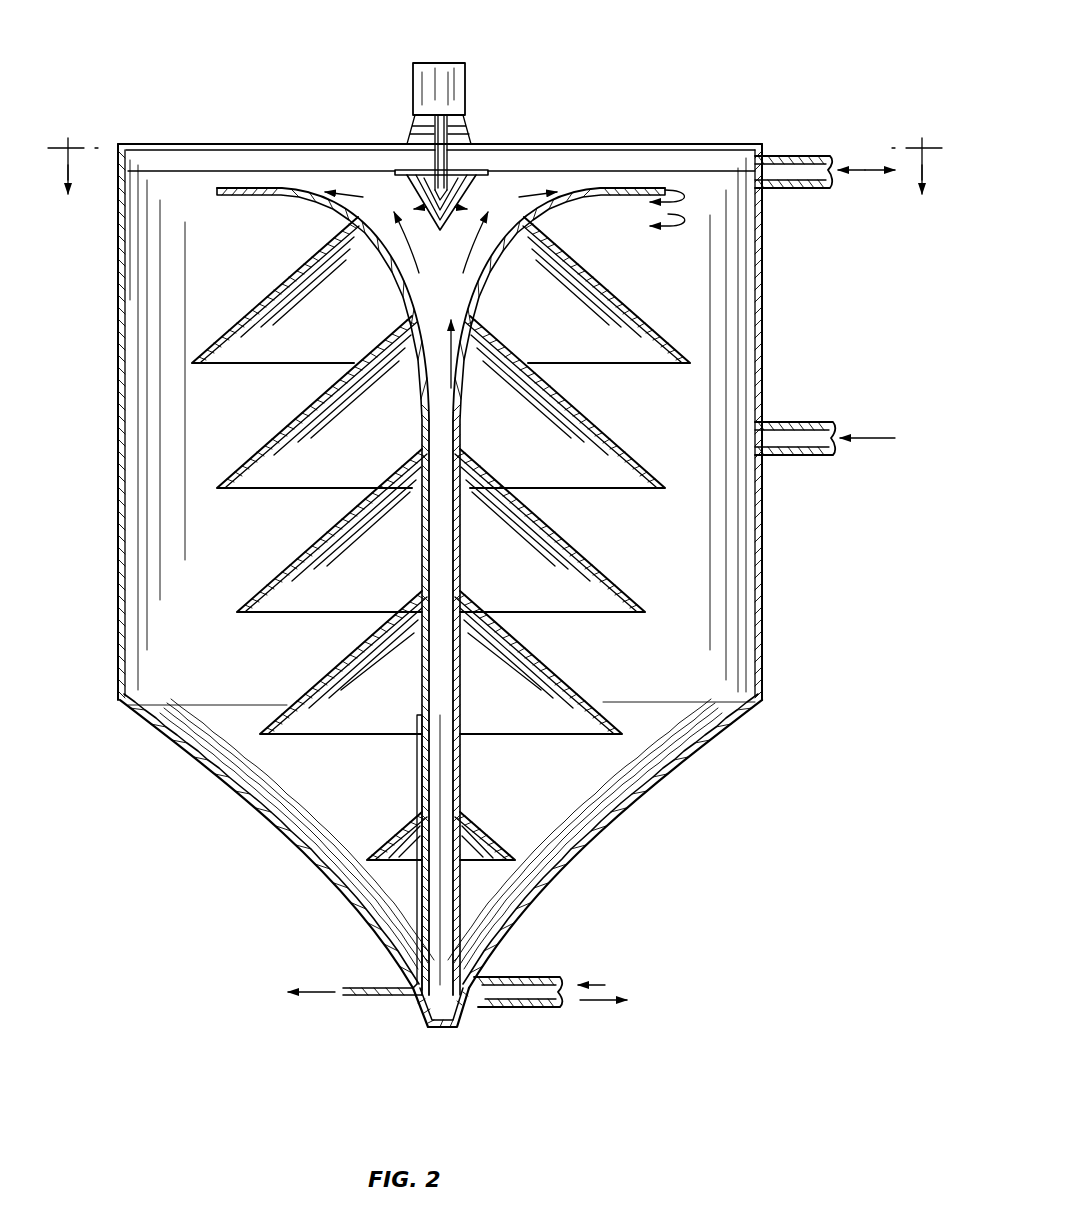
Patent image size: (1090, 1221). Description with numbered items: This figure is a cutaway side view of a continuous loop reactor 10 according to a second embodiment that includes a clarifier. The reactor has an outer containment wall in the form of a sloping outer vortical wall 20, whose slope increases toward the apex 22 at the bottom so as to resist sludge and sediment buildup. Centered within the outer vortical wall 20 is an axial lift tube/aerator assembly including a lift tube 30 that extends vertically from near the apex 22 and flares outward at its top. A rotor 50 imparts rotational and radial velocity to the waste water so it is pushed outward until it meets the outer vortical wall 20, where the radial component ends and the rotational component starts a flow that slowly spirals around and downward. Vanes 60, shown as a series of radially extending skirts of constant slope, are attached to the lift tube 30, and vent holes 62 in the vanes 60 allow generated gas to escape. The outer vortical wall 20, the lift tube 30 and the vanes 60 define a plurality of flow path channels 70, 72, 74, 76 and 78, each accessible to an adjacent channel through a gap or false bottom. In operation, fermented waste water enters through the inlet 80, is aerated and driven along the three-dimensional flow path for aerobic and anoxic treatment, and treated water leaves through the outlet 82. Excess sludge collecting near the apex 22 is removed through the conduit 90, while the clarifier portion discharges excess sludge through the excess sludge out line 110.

The continuous loop reactor 10 is at (690, 95).
The outer vortical wall 20 is at (728, 731).
The apex 22 is at (117, 462).
The lift tube 30 is at (457, 888).
The rotor 50 is at (447, 158).
The vanes 60 is at (555, 670).
The vent holes 62 is at (483, 318).
The flow path channel 70 is at (668, 286).
The flow path channel 72 is at (668, 400).
The flow path channel 74 is at (650, 542).
The flow path channel 76 is at (640, 655).
The flow path channel 78 is at (545, 762).
The inlet 80 is at (797, 190).
The outlet 82 is at (808, 457).
The conduit 90 is at (520, 1010).
The excess sludge out line 110 is at (385, 997).